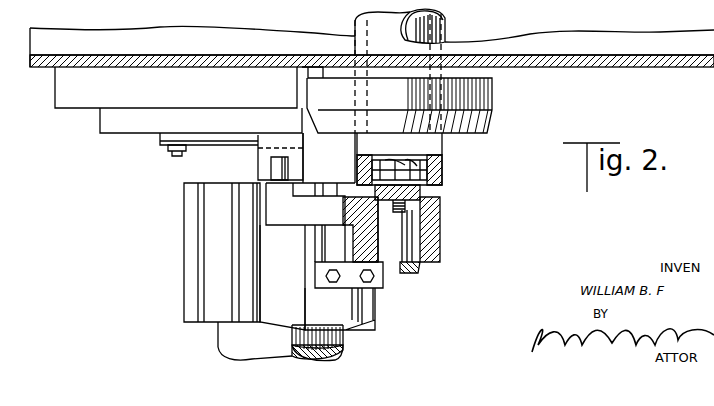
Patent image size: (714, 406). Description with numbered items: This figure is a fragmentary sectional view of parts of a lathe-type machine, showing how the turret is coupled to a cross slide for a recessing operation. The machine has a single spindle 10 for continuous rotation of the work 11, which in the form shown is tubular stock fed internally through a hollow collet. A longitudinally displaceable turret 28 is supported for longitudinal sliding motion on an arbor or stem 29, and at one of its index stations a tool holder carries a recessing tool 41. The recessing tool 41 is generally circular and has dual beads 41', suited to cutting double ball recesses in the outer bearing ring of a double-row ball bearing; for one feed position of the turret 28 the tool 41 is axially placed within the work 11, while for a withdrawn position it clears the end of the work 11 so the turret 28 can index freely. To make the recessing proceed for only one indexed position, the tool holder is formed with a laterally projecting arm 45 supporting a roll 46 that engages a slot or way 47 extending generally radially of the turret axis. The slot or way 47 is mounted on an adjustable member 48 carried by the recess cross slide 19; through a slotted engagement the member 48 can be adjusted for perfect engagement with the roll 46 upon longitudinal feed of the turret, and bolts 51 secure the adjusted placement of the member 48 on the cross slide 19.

The spindle 10 is at (492, 103).
The work 11 is at (443, 158).
The recess cross slide 19 is at (147, 125).
The turret 28 is at (213, 267).
The arbor or stem 29 is at (222, 338).
The recessing tool 41 is at (434, 187).
The dual beads 41' is at (394, 152).
The laterally projecting arm 45 is at (292, 220).
The roll 46 is at (280, 169).
The slot or way 47 is at (285, 151).
The adjustable member 48 is at (207, 142).
The bolts 51 is at (177, 157).